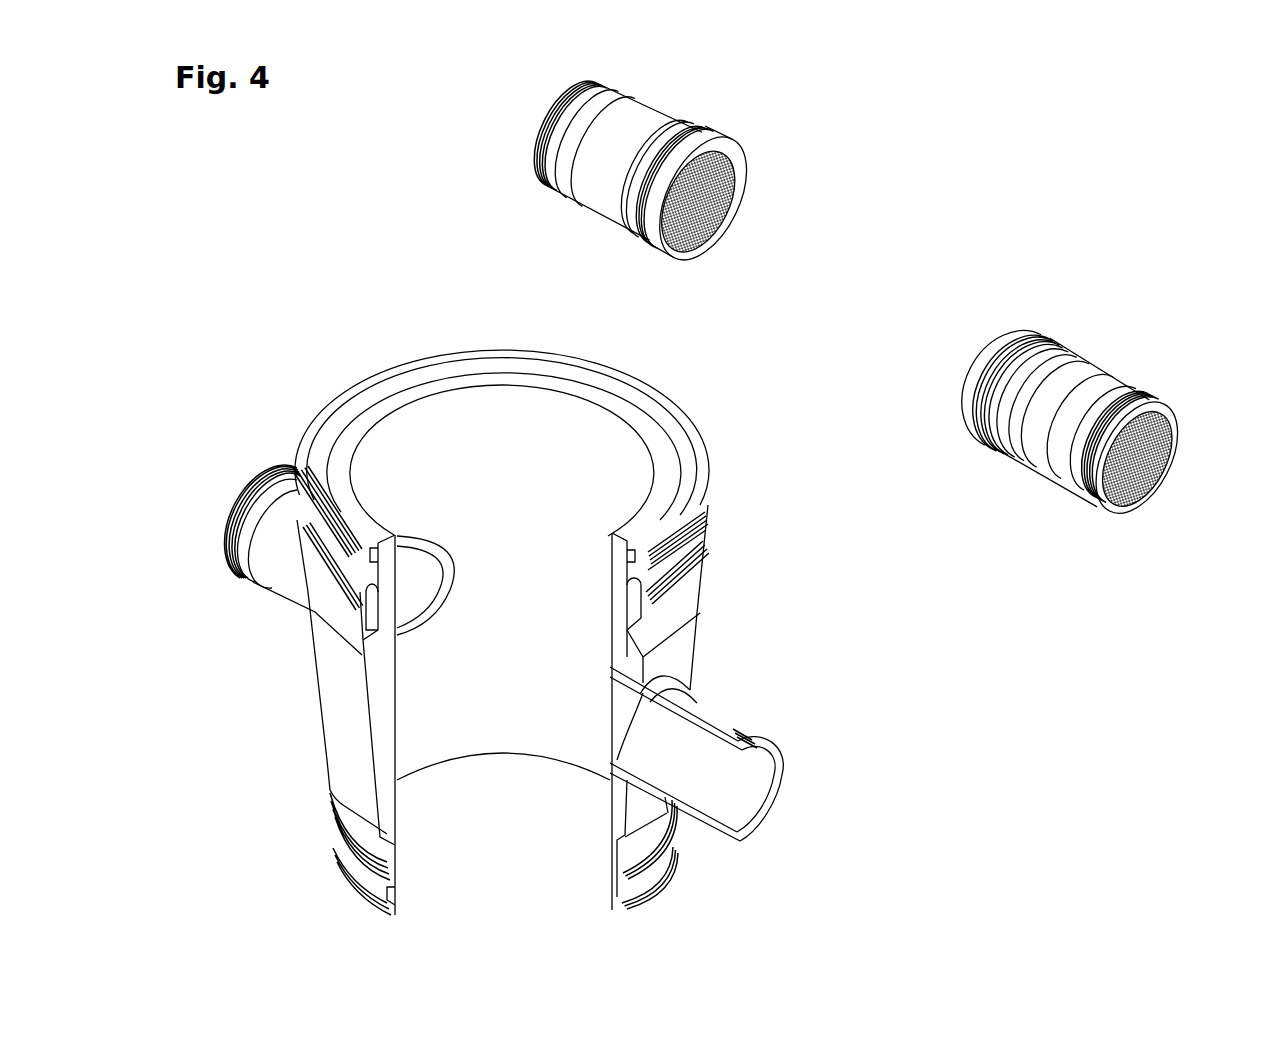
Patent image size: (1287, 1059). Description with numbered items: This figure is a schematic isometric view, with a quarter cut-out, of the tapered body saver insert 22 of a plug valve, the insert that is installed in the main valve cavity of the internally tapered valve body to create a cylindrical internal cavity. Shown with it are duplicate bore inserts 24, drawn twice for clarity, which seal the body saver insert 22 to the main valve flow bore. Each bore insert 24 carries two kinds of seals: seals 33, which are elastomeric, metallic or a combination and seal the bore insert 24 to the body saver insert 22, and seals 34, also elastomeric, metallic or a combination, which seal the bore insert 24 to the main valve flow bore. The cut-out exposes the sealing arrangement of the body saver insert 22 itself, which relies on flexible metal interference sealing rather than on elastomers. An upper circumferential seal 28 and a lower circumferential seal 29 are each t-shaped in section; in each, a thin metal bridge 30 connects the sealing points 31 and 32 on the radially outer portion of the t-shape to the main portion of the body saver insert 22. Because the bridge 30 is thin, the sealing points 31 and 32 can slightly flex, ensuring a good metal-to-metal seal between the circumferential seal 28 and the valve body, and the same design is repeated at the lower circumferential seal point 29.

The body saver insert 22 is at (335, 714).
The bore insert 24 is at (590, 156).
The circumferential seal 28 is at (358, 587).
The lower circumferential seal 29 is at (355, 867).
The thin metal bridge 30 is at (633, 580).
The sealing point 31 is at (695, 538).
The sealing point 32 is at (695, 602).
The seal 33 is at (705, 130).
The seal 34 is at (586, 80).